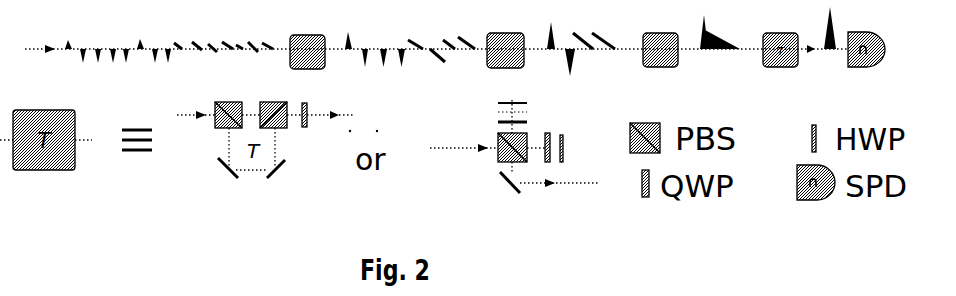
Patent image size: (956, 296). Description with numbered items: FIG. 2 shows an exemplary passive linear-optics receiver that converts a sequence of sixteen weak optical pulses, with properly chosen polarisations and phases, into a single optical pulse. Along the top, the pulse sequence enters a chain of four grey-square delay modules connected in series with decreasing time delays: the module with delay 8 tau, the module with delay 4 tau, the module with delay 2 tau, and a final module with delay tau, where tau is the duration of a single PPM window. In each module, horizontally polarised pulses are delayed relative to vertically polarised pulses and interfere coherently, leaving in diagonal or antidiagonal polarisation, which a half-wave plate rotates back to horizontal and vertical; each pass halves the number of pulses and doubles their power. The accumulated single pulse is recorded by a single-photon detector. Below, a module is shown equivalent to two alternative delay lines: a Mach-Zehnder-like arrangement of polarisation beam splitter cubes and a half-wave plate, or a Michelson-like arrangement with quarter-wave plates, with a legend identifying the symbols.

The 8T optical delay line 8 is at (307, 52).
The 4T optical delay line 4 is at (505, 50).
The 2T optical delay line 2 is at (660, 50).